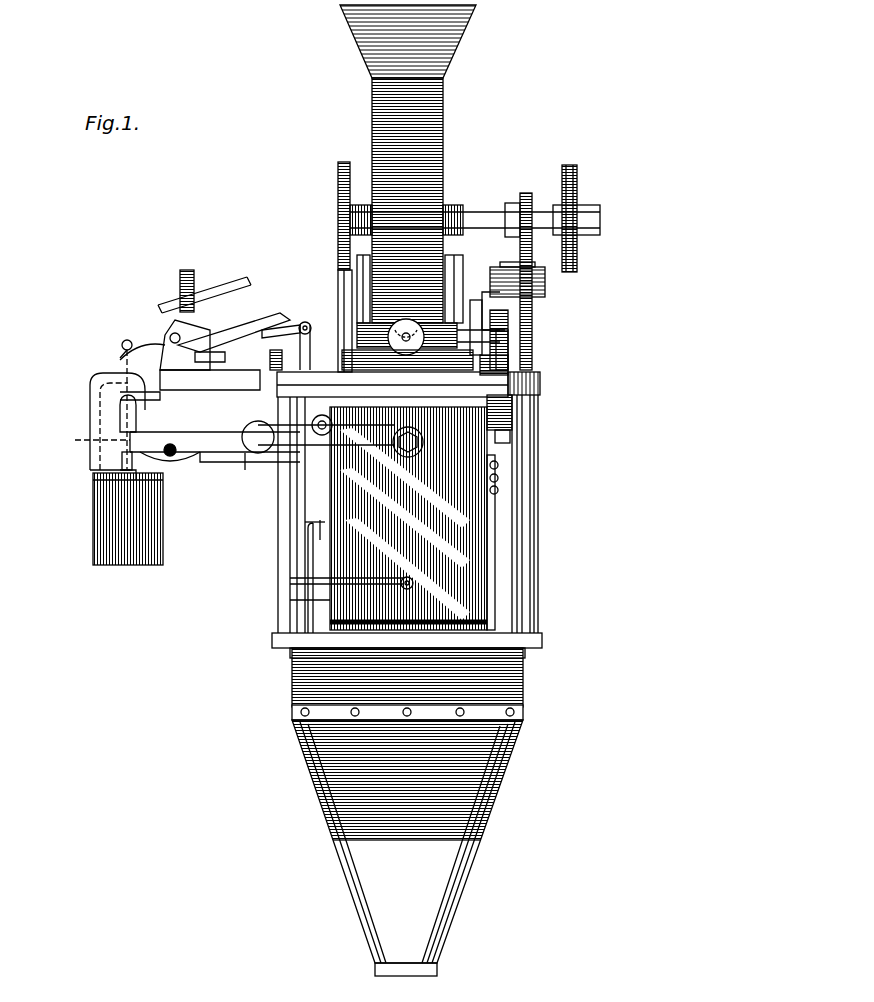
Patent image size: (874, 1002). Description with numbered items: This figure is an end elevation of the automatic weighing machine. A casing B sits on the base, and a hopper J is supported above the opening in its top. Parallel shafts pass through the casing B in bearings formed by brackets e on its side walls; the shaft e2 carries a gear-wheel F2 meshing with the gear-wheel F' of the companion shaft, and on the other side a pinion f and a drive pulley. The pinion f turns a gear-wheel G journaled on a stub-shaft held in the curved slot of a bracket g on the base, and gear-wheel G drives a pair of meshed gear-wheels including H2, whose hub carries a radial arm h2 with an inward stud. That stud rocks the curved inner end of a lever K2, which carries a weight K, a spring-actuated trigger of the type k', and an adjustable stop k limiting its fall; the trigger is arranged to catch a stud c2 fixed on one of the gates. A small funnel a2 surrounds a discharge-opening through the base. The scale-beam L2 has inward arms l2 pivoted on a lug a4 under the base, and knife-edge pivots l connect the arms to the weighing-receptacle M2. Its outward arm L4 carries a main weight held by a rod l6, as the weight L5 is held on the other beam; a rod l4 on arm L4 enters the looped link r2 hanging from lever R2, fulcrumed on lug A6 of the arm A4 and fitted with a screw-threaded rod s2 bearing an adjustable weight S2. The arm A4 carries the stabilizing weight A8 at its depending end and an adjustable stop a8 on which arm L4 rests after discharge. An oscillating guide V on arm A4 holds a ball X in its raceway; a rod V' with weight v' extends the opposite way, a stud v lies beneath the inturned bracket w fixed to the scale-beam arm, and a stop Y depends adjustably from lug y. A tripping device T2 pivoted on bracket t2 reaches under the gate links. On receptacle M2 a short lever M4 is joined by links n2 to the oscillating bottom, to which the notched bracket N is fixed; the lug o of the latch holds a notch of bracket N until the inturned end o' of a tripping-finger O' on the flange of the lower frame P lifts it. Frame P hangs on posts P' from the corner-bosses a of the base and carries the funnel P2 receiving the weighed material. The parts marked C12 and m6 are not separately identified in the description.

The hopper J is at (462, 42).
The casing B is at (443, 165).
The gear-wheel F2 is at (338, 185).
The shaft e2 is at (485, 213).
The bracket e is at (350, 216).
The pinion f is at (528, 195).
The gear-wheel F' is at (585, 218).
The standards C12 is at (370, 300).
The gear-wheel G is at (510, 270).
The bracket g is at (485, 309).
The stud c2 is at (445, 312).
The screw-threaded stop k is at (525, 334).
The trigger k' is at (526, 344).
The gear-wheel H2 is at (482, 325).
The lever K2 is at (508, 362).
The funnel a2 is at (342, 362).
The corner-boss a is at (540, 380).
The post P' is at (551, 514).
The weighing-receptacle M2 is at (408, 518).
The links n2 is at (495, 565).
The weight K is at (512, 410).
The radial arm h2 is at (510, 437).
The short lever M4 is at (498, 470).
The lug a4 is at (360, 433).
The knife-edge pivot l is at (412, 445).
The arms l2 is at (320, 435).
The oscillating guide V is at (215, 458).
The rod V' is at (256, 452).
The arm L4 is at (202, 462).
The scale-beam L2 is at (233, 490).
The rod l6 is at (172, 456).
The rod l4 is at (86, 434).
The arm A4 is at (90, 398).
The bracket w is at (140, 386).
The stud v is at (137, 413).
The weight A8 is at (93, 530).
The main weight L5 is at (128, 475).
The stop a8 is at (122, 462).
The ball X is at (160, 368).
The stop Y is at (234, 337).
The lug y is at (187, 323).
The weight S2 is at (180, 300).
The screw-threaded rod s2 is at (200, 285).
The lug A6 is at (140, 345).
The lever R2 is at (122, 345).
The link r2 is at (120, 358).
The tripping device T2 is at (285, 327).
The bracket t2 is at (318, 330).
The weight v' is at (274, 349).
The tripping-finger O' is at (276, 578).
The lug o is at (322, 512).
The inwardly-projecting end o' is at (291, 520).
The lever m6 is at (290, 581).
The bracket N is at (290, 600).
The frame P is at (430, 684).
The funnel P2 is at (480, 822).